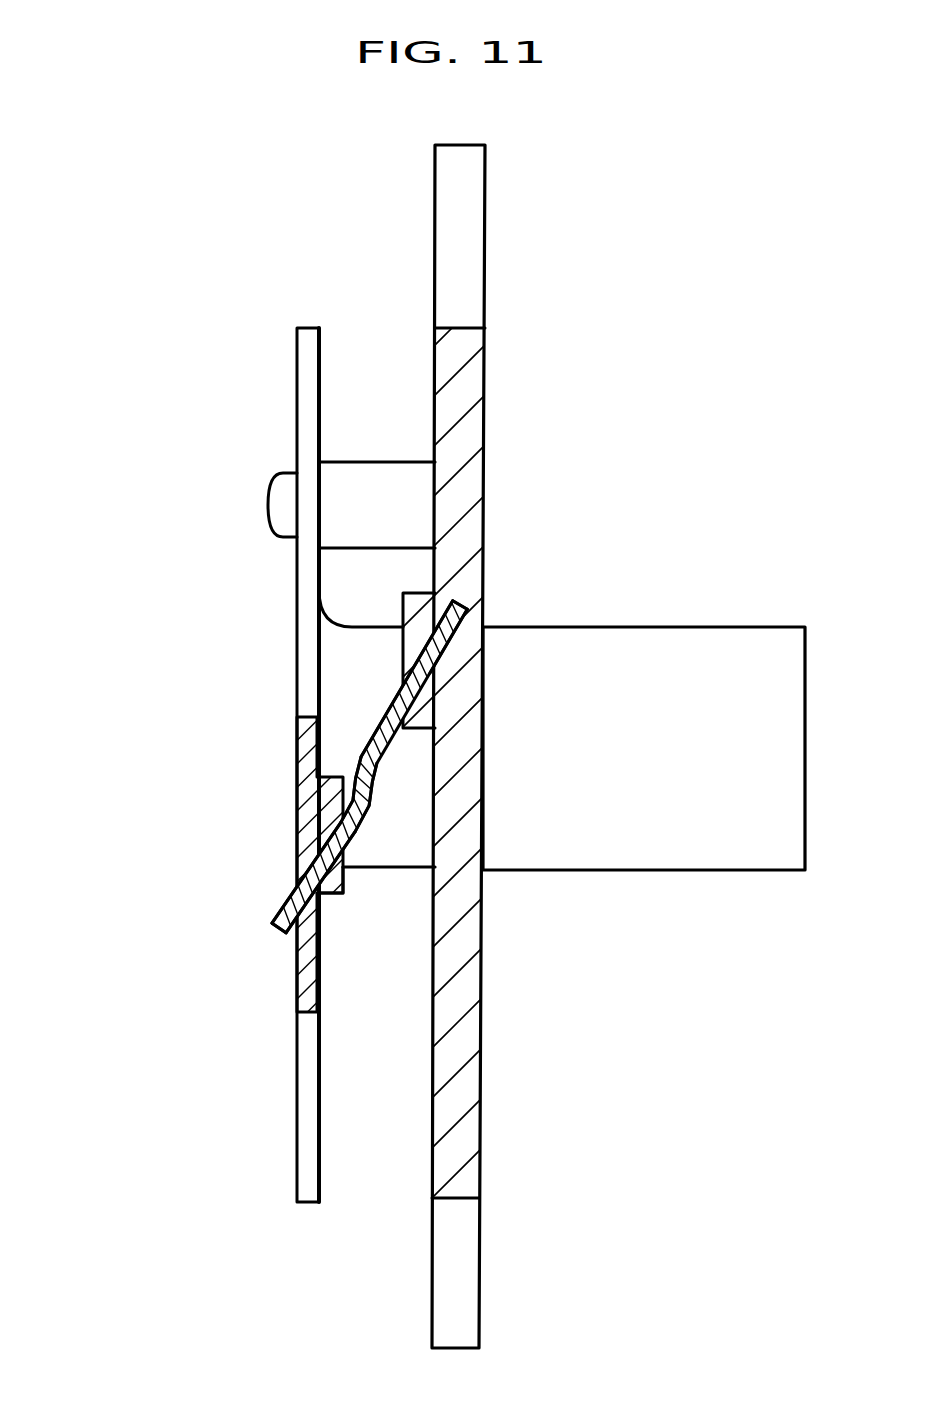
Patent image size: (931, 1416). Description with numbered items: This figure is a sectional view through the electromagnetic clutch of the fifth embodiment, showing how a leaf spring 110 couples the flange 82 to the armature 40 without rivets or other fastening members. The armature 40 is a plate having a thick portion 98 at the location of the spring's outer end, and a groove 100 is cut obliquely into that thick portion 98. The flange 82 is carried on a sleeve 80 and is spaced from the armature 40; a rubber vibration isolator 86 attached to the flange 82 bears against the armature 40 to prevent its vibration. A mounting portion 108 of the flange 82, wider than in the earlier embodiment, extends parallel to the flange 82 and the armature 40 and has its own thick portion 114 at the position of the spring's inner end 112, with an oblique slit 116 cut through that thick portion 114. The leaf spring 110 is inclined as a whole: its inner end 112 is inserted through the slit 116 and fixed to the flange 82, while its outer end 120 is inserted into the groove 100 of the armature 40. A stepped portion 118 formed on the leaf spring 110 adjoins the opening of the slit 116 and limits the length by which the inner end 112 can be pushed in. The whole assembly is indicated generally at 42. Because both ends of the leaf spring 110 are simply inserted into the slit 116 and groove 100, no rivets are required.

The armature 40 is at (467, 384).
The fastening assembly 42 is at (159, 577).
The sleeve 80 is at (656, 850).
The flange 82 is at (308, 397).
The rubber vibration isolator 86 is at (348, 492).
The thick portion 98 is at (410, 637).
The groove 100 is at (453, 622).
The mounting portion 108 is at (308, 770).
The leaf spring 110 is at (392, 713).
The inner end 112 is at (272, 920).
The thick portion 114 is at (347, 893).
The slit 116 is at (300, 858).
The stepped portion 118 is at (345, 803).
The outer end 120 is at (468, 598).